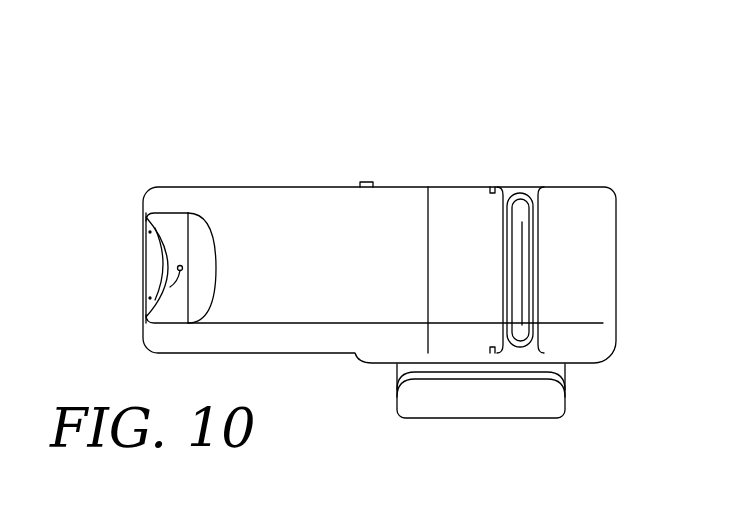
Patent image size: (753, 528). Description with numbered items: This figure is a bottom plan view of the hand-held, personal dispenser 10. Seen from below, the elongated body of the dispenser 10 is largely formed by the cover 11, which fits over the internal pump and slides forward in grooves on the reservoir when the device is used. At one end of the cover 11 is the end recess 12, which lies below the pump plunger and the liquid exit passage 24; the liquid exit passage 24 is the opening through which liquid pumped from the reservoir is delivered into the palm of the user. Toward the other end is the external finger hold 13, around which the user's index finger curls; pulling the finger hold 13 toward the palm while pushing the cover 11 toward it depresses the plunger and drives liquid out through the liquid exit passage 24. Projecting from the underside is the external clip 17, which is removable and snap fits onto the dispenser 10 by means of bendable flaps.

The dispenser 10 is at (140, 155).
The cover 11 is at (250, 187).
The end recess 12 is at (140, 241).
The finger hold 13 is at (513, 192).
The clip 17 is at (488, 403).
The liquid exit passage 24 is at (170, 287).